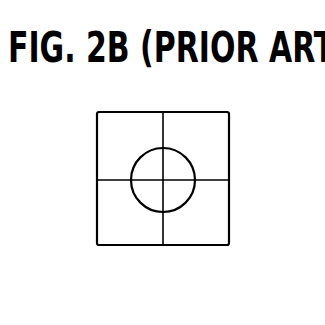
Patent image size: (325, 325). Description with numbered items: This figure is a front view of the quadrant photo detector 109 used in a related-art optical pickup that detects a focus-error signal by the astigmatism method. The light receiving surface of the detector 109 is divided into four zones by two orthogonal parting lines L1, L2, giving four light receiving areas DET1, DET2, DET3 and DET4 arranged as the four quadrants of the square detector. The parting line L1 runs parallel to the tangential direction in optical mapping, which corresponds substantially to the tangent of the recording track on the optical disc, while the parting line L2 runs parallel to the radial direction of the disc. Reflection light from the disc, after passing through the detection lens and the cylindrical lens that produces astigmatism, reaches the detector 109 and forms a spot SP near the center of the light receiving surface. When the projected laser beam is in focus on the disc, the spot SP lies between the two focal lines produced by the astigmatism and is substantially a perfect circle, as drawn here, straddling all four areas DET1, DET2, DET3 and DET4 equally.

The quadrant photo detector 109 is at (156, 246).
The spot SP is at (131, 172).
The parting line L1 is at (195, 176).
The parting line L2 is at (163, 123).
The light receiving area DET1 is at (194, 130).
The light receiving area DET2 is at (194, 232).
The light receiving area DET3 is at (130, 232).
The light receiving area DET4 is at (130, 130).